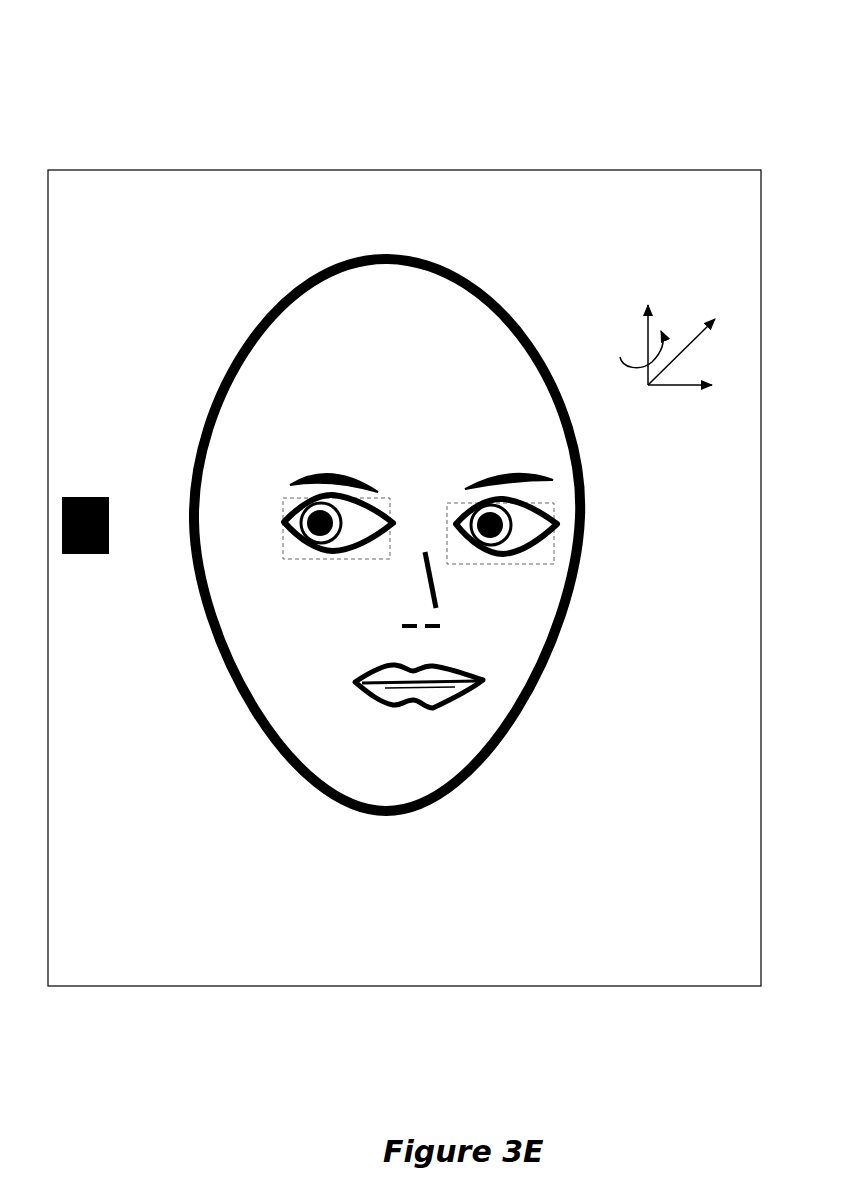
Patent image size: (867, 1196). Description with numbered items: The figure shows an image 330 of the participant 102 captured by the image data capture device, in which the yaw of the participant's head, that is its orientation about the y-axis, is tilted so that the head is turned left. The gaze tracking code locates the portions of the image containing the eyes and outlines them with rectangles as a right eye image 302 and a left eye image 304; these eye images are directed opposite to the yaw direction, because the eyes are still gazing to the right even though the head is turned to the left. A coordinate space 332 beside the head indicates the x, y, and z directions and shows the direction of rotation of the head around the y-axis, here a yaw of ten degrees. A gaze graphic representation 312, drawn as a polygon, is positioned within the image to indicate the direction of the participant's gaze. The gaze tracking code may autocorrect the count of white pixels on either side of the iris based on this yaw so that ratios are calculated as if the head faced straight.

The image 330 is at (382, 97).
The participant 102 is at (230, 283).
The coordinate space 332 is at (588, 256).
The gaze graphic representation 312 is at (94, 554).
The right eye image 302 is at (389, 559).
The left eye image 304 is at (507, 564).